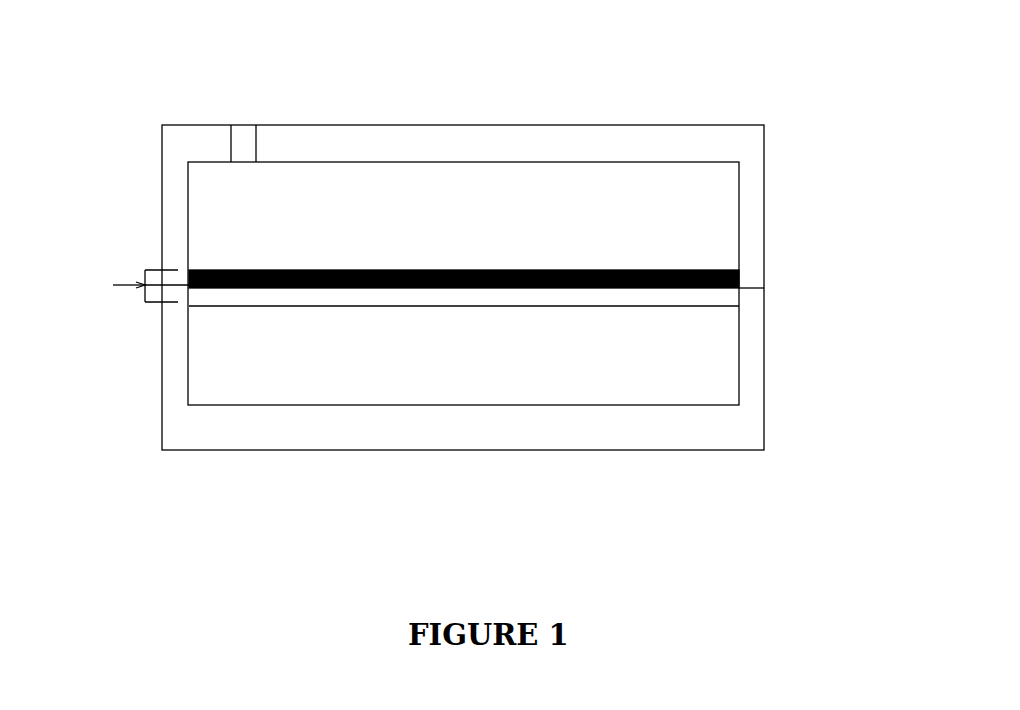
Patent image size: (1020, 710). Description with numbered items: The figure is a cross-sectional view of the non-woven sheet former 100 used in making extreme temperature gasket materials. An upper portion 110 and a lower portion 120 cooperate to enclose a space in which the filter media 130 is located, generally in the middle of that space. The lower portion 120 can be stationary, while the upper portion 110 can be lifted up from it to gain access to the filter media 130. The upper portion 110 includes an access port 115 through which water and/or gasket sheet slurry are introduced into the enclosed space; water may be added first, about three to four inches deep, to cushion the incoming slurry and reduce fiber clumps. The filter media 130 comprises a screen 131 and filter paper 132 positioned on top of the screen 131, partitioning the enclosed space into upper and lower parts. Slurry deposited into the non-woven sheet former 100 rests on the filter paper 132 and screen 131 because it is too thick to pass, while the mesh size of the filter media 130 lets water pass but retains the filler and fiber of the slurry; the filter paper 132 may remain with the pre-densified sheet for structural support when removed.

The non-woven sheet former 100 is at (443, 33).
The upper portion 110 is at (673, 136).
The access port 115 is at (247, 145).
The lower portion 120 is at (693, 425).
The filter media 130 is at (119, 291).
The screen 131 is at (710, 296).
The filter paper 132 is at (735, 271).